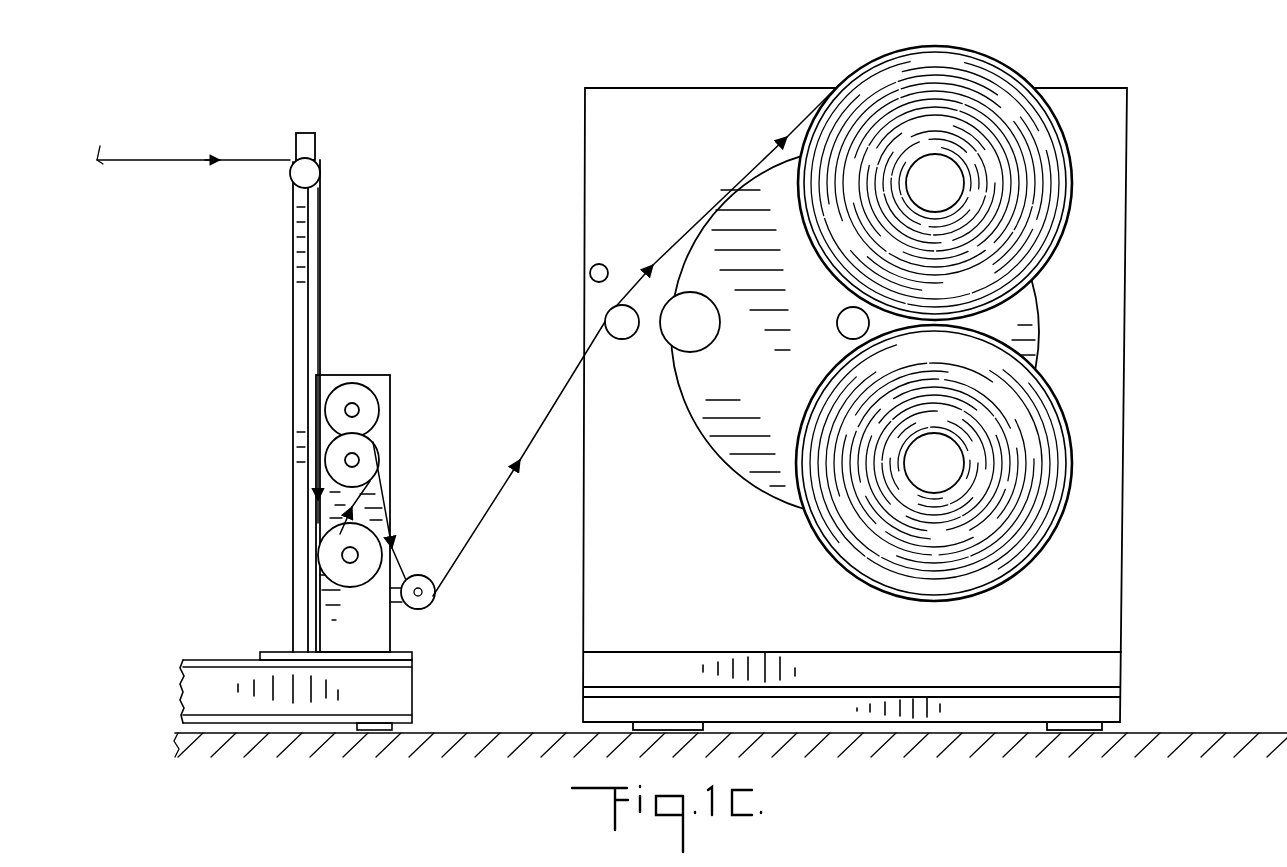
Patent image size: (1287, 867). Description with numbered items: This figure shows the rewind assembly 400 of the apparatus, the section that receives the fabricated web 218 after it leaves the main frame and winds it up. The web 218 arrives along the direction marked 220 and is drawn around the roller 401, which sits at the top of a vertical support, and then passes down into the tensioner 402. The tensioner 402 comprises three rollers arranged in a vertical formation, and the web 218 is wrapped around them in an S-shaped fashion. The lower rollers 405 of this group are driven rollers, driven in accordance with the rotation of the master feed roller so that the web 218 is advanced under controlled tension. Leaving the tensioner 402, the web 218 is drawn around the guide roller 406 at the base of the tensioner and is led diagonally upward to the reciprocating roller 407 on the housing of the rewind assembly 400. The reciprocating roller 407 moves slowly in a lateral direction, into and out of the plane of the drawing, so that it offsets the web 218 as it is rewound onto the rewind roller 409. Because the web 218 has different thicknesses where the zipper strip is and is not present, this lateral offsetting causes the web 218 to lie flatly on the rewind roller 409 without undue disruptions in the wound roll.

The web of thermoplastic material 220 is at (215, 136).
The roller 401 is at (318, 172).
The fabricated web 218 is at (321, 235).
The tensioner 402 is at (396, 371).
The lower rollers 405 is at (334, 468).
The guide roller 406 is at (434, 604).
The reciprocating roller 407 is at (605, 323).
The rewind roller 409 is at (1012, 78).
The rewind assembly 400 is at (880, 381).